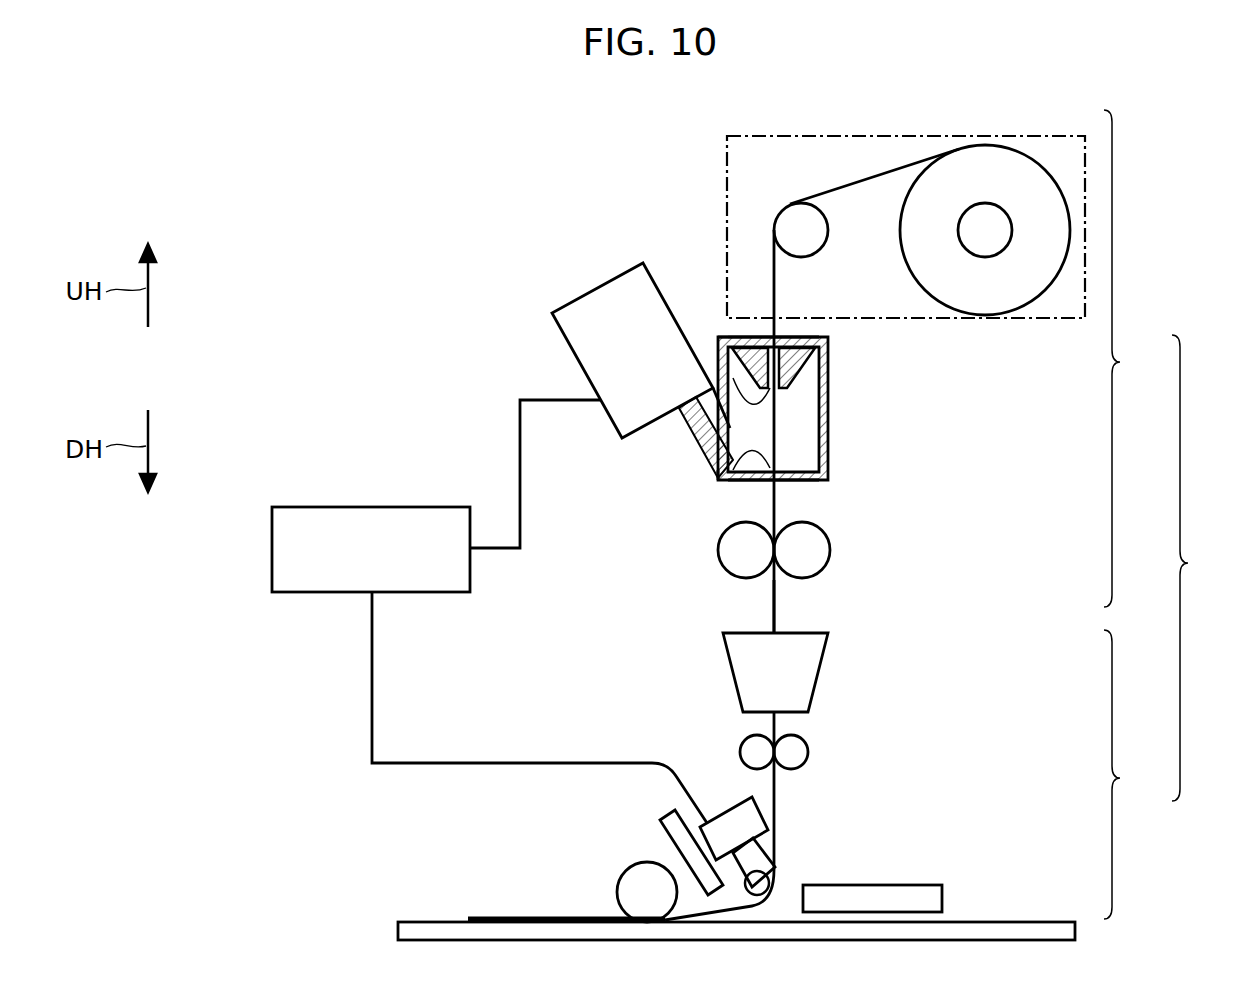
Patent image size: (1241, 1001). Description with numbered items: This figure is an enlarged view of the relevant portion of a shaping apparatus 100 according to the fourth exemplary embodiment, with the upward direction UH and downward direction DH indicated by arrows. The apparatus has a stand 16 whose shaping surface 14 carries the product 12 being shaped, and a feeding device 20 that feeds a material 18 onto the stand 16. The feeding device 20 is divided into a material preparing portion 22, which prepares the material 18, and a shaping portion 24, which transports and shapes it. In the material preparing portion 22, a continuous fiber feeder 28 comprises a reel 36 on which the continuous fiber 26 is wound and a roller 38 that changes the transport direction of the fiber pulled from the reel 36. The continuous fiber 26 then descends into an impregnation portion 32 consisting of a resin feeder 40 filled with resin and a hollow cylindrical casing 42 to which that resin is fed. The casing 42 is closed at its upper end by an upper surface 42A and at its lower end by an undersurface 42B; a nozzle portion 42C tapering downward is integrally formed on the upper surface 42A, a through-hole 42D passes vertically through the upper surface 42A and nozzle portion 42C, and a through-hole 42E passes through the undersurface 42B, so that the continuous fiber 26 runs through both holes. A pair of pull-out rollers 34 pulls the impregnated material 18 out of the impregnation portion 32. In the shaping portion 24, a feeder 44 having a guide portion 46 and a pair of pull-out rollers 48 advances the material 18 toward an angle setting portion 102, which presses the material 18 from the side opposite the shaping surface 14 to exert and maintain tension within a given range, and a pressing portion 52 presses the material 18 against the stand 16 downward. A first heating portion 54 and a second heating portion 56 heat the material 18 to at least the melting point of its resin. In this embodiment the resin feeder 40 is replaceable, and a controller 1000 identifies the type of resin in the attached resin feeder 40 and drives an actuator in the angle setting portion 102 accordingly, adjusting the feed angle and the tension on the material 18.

The shaping apparatus 100 is at (388, 215).
The controller 1000 is at (342, 507).
The product 12 is at (452, 862).
The shaping surface 14 is at (427, 921).
The stand 16 is at (1083, 924).
The material 18 is at (766, 598).
The feeding device 20 is at (1198, 568).
The material preparing portion 22 is at (1130, 358).
The shaping portion 24 is at (1130, 774).
The continuous fiber 26 is at (840, 192).
The continuous fiber feeder 28 is at (884, 133).
The impregnation portion 32 is at (832, 417).
The pair of pull-out rollers 34 is at (748, 530).
The reel 36 is at (985, 170).
The roller 38 is at (788, 230).
The resin feeder 40 is at (575, 352).
The casing 42 is at (828, 438).
The upper surface 42A is at (818, 333).
The undersurface 42B is at (803, 482).
The nozzle portion 42C is at (797, 370).
The through-hole 42D is at (720, 338).
The through-hole 42E is at (717, 477).
The feeder 44 is at (645, 633).
The guide portion 46 is at (743, 660).
The pair of pull-out rollers 48 is at (785, 740).
The pressing portion 52 is at (621, 869).
The first heating portion 54 is at (655, 820).
The second heating portion 56 is at (895, 882).
The angle setting portion 102 is at (734, 804).